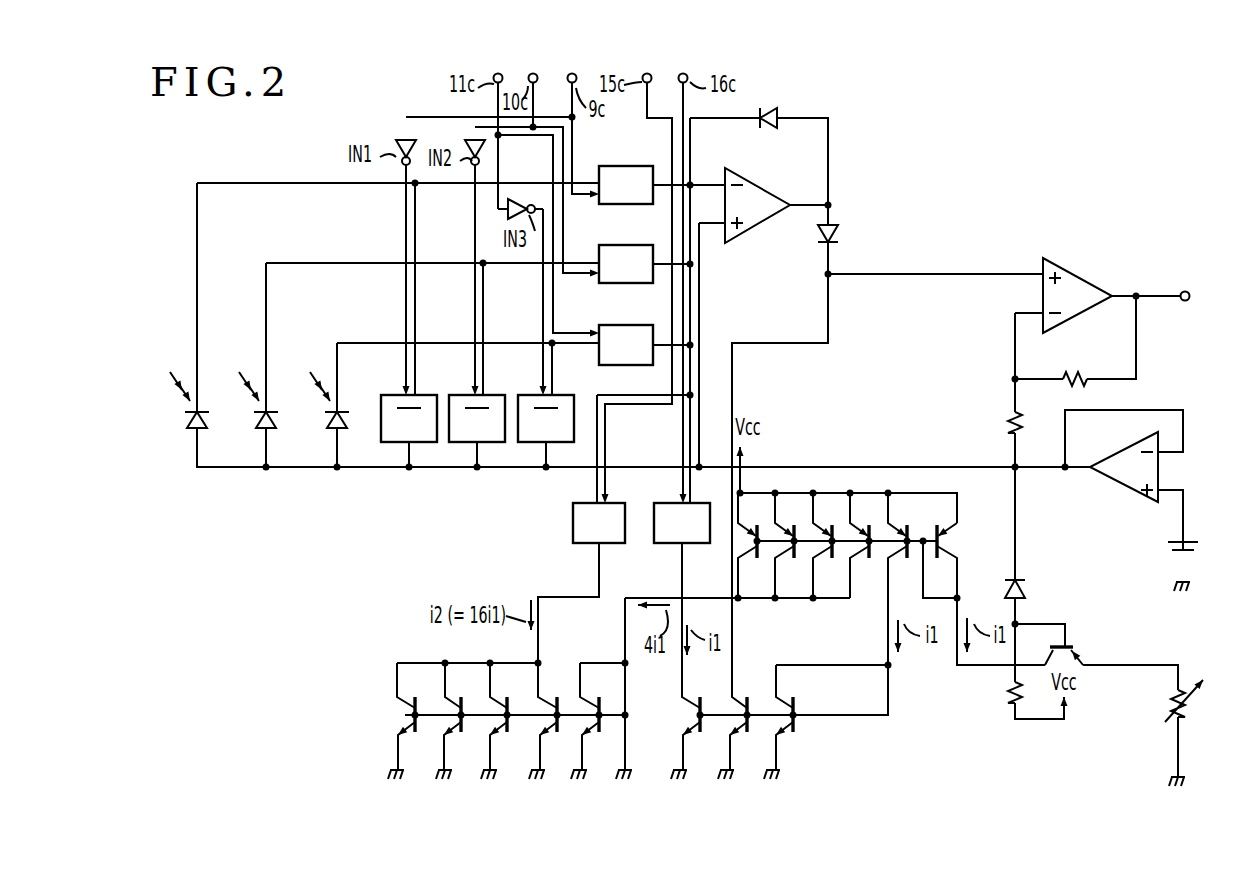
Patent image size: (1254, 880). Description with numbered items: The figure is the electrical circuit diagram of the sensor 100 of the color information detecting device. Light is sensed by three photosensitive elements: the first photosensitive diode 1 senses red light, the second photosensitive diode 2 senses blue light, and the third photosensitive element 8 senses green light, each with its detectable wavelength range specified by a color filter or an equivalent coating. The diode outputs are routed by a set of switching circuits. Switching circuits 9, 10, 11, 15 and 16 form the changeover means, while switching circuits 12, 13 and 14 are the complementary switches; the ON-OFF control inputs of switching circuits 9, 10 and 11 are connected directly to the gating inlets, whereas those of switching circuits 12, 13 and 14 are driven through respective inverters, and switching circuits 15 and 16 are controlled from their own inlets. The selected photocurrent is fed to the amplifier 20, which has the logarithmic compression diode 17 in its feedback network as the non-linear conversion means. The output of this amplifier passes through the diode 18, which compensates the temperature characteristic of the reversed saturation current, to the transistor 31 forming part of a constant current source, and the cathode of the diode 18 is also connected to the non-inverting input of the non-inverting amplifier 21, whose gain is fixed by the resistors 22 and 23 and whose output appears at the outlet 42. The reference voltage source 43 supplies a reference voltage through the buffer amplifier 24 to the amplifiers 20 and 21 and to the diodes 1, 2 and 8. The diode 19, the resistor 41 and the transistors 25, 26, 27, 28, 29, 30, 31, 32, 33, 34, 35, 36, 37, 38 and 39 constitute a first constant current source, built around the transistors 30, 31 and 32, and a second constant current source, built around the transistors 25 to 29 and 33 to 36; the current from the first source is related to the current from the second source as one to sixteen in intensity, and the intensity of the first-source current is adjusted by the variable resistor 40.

The first photosensitive diode 1 is at (205, 420).
The second photosensitive diode 2 is at (274, 420).
The third photosensitive element 8 is at (345, 420).
The switching circuit 9 is at (630, 166).
The switching circuit 10 is at (632, 245).
The switching circuit 11 is at (632, 325).
The switching circuit 12 is at (426, 395).
The switching circuit 13 is at (497, 395).
The switching circuit 14 is at (566, 395).
The switching circuit 15 is at (613, 502).
The switching circuit 16 is at (690, 502).
The logarithmic compression diode 17 is at (762, 105).
The diode 18 is at (838, 233).
The diode 19 is at (1025, 590).
The amplifier 20 is at (764, 190).
The non-inverting amplifier 21 is at (1084, 275).
The resistor 22 is at (1074, 374).
The resistor 23 is at (1011, 424).
The buffer amplifier 24 is at (1128, 450).
The transistor 25 is at (405, 715).
The transistor 26 is at (458, 706).
The transistor 27 is at (503, 706).
The transistor 28 is at (550, 706).
The transistor 29 is at (596, 706).
The transistor 30 is at (695, 715).
The transistor 31 is at (740, 706).
The transistor 32 is at (790, 706).
The transistor 33 is at (760, 548).
The transistor 34 is at (797, 548).
The transistor 35 is at (835, 548).
The transistor 36 is at (872, 552).
The transistor 37 is at (910, 552).
The transistor 38 is at (942, 543).
The transistor 39 is at (1080, 648).
The variable resistor 40 is at (1190, 706).
The resistor 41 is at (1010, 694).
The outlet 42 is at (1184, 290).
The reference voltage source 43 is at (1198, 545).
The sensor 100 is at (988, 148).